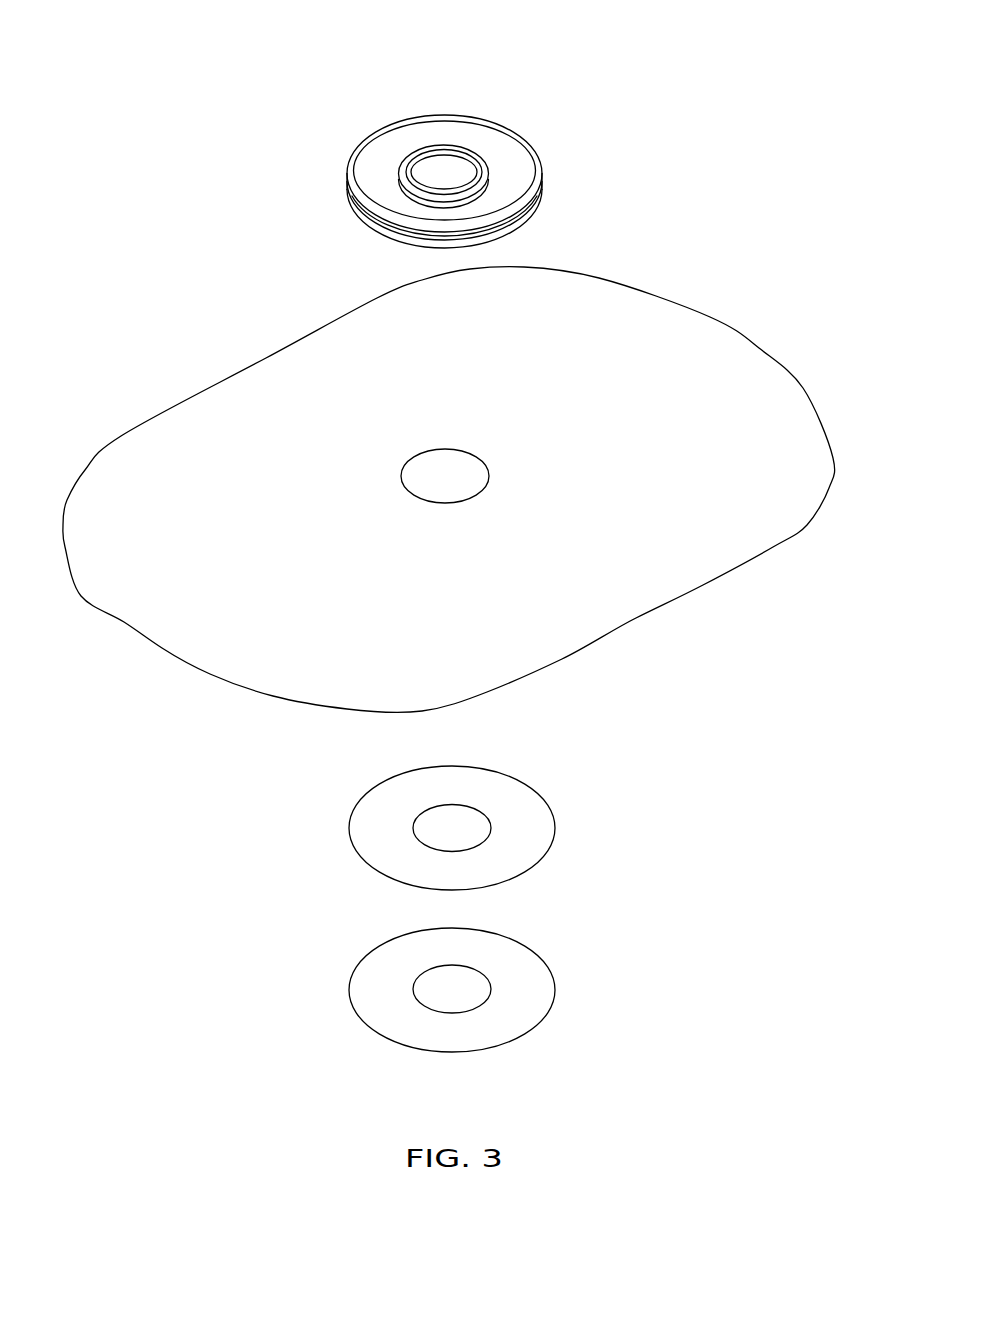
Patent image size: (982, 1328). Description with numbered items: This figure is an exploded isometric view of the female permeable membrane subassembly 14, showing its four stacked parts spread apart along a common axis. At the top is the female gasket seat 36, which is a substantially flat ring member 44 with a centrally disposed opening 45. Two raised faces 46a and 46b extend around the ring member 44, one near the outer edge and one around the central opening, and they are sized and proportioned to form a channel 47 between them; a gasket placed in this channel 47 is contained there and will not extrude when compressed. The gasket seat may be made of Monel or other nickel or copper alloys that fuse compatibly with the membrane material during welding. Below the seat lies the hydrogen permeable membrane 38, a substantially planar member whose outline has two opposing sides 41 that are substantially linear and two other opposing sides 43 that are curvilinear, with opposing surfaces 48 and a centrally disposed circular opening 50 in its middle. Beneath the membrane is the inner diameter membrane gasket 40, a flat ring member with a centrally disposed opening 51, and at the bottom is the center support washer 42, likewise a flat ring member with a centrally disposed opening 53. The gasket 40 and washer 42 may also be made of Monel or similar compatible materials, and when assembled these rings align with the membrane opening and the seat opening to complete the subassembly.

The female permeable membrane subassembly 14 is at (698, 192).
The female gasket seat 36 is at (348, 192).
The hydrogen permeable membrane 38 is at (182, 477).
The inner diameter membrane gasket 40 is at (372, 828).
The opposing sides 41 is at (267, 358).
The center support washer 42 is at (370, 978).
The opposing sides 43 is at (124, 618).
The ring member 44 is at (483, 197).
The centrally disposed opening 45 is at (430, 180).
The raised face 46a is at (387, 127).
The raised face 46b is at (468, 147).
The channel 47 is at (435, 135).
The opposing surfaces 48 is at (706, 369).
The centrally disposed circular opening 50 is at (450, 466).
The centrally disposed opening 51 is at (463, 827).
The centrally disposed opening 53 is at (465, 985).